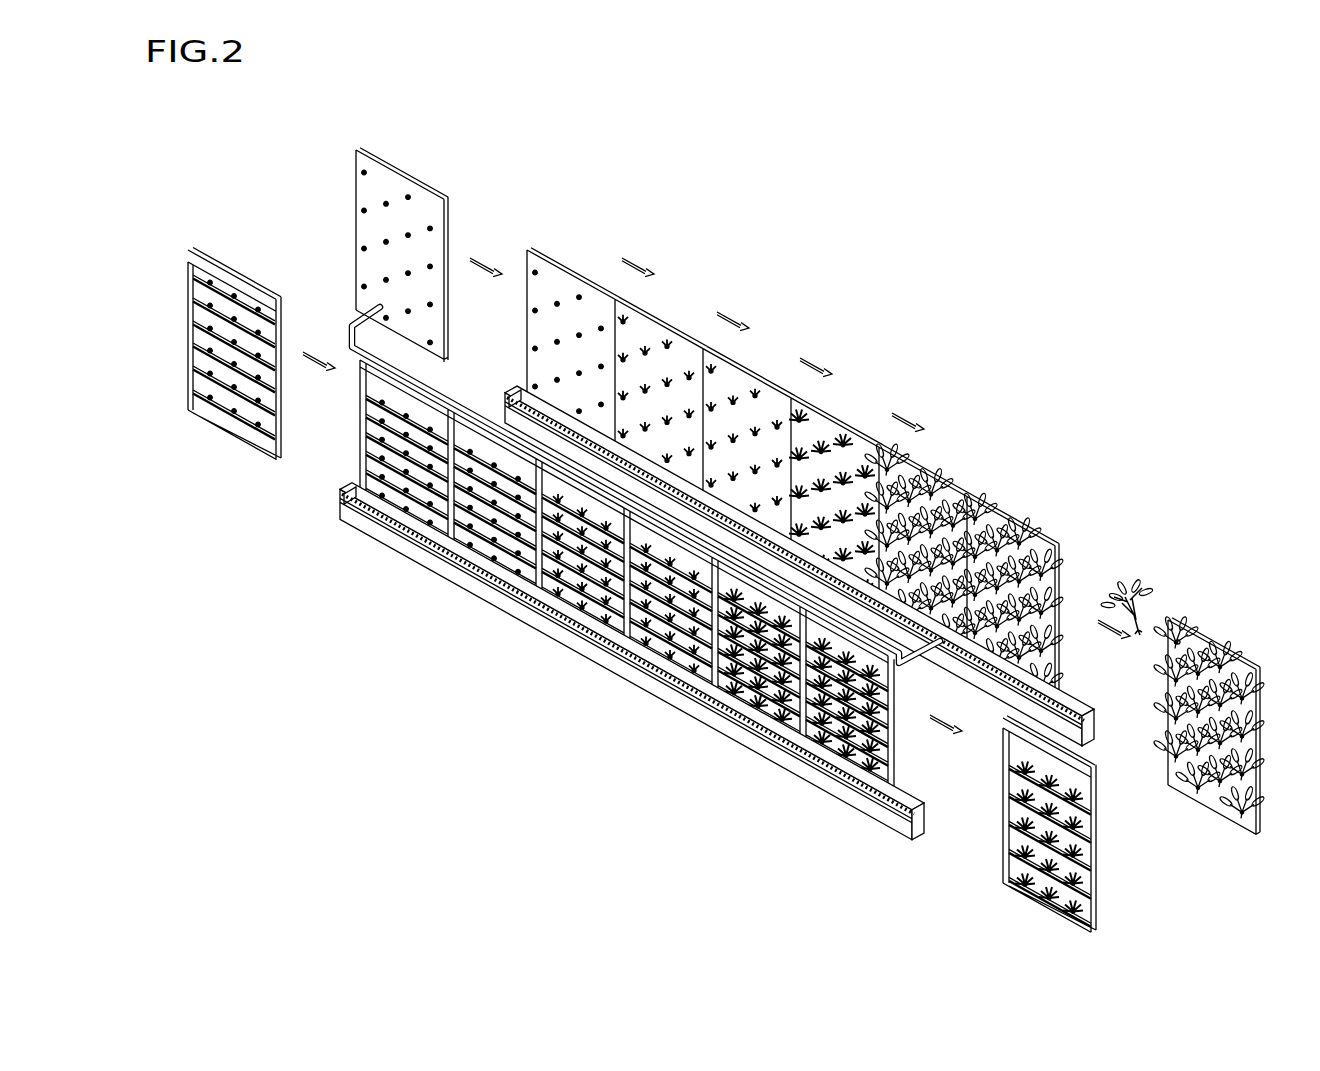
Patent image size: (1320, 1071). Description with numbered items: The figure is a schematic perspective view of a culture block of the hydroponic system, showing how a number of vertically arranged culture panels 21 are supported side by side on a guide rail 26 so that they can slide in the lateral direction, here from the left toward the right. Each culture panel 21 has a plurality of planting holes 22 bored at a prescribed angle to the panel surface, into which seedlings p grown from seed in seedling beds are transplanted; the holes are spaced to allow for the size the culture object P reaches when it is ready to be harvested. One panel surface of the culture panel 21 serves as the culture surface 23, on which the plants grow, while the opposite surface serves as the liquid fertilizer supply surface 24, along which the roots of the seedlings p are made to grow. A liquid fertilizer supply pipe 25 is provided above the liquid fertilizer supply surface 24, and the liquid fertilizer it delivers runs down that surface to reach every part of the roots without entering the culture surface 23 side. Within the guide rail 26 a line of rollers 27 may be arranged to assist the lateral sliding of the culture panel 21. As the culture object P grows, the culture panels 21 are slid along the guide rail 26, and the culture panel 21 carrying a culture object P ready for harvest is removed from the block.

The culture panel 21 is at (403, 160).
The planting hole 22 is at (265, 310).
The culture surface 23 is at (424, 215).
The liquid fertilizer supply surface 24 is at (205, 258).
The liquid fertilizer supply pipe 25 is at (347, 340).
The guide rail 26 is at (345, 503).
The roller 27 is at (390, 517).
The seedling p is at (360, 172).
The culture object P is at (1012, 530).